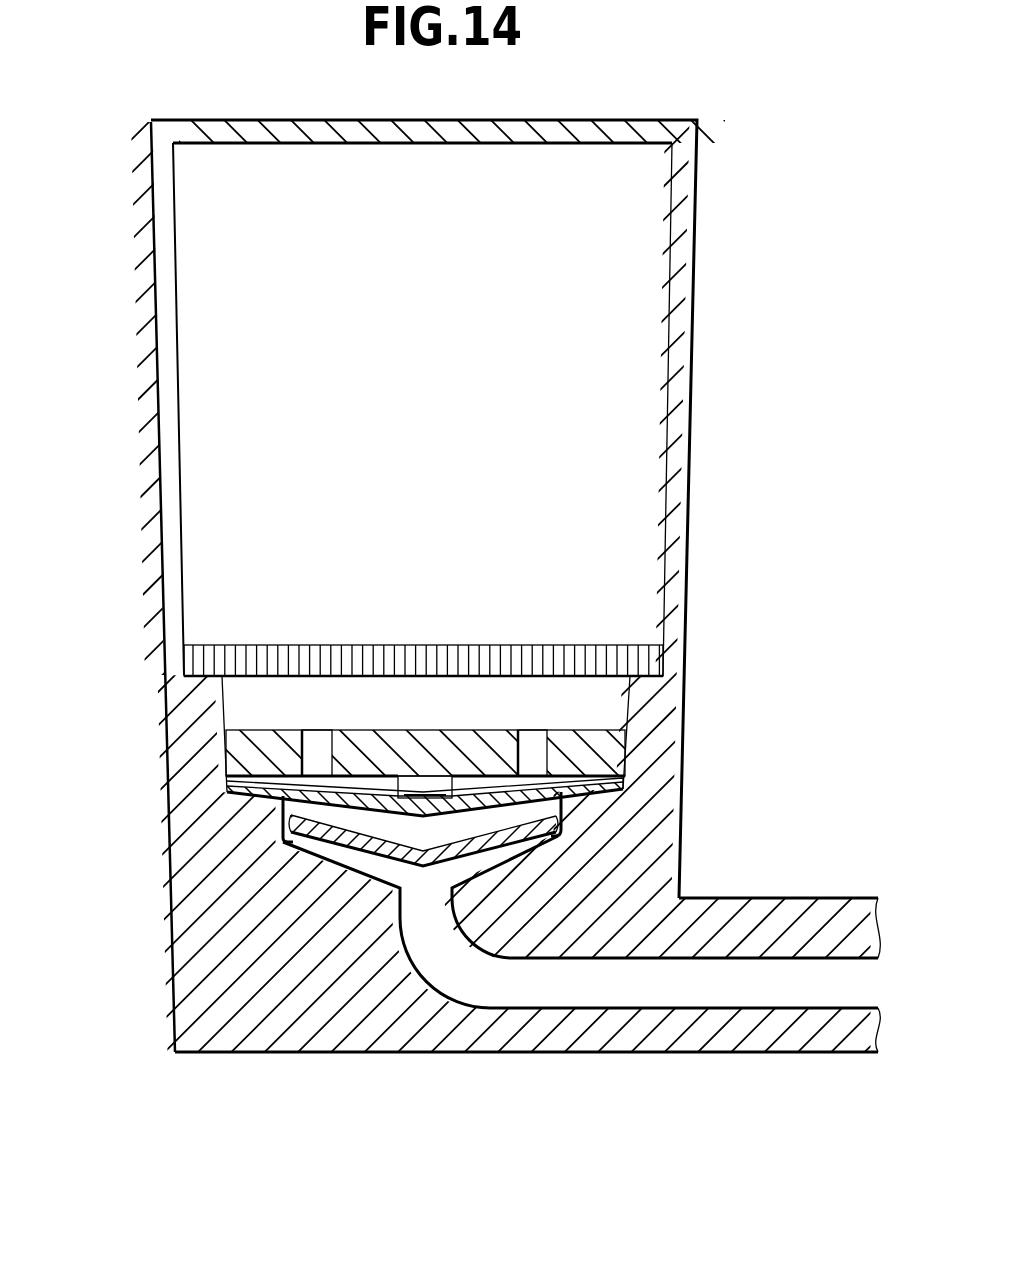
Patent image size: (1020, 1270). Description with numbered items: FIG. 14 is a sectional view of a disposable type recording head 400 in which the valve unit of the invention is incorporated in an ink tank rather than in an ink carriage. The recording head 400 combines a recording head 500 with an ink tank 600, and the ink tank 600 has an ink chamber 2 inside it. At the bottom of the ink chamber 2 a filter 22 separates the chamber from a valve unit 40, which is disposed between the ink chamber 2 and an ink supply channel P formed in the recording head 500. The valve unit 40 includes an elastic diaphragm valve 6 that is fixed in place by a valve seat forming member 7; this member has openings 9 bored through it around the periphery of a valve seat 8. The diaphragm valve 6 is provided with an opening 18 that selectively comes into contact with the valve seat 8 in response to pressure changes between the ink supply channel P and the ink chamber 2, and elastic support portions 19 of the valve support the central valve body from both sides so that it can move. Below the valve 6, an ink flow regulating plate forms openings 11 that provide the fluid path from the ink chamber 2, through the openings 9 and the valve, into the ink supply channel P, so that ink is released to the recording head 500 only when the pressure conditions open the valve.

The ink chamber 2 is at (645, 468).
The recording head 400 is at (722, 135).
The ink tank 600 is at (148, 400).
The recording head 500 is at (296, 1055).
The ink supply channel P is at (810, 985).
The filter 22 is at (526, 652).
The valve unit 40 is at (510, 635).
The valve seat forming member 7 is at (232, 748).
The openings 9 is at (312, 750).
The valve seat 8 is at (389, 780).
The opening 18 is at (461, 790).
The diaphragm valve 6 is at (628, 786).
The elastic support portions 19 is at (282, 806).
The openings 11 is at (285, 842).